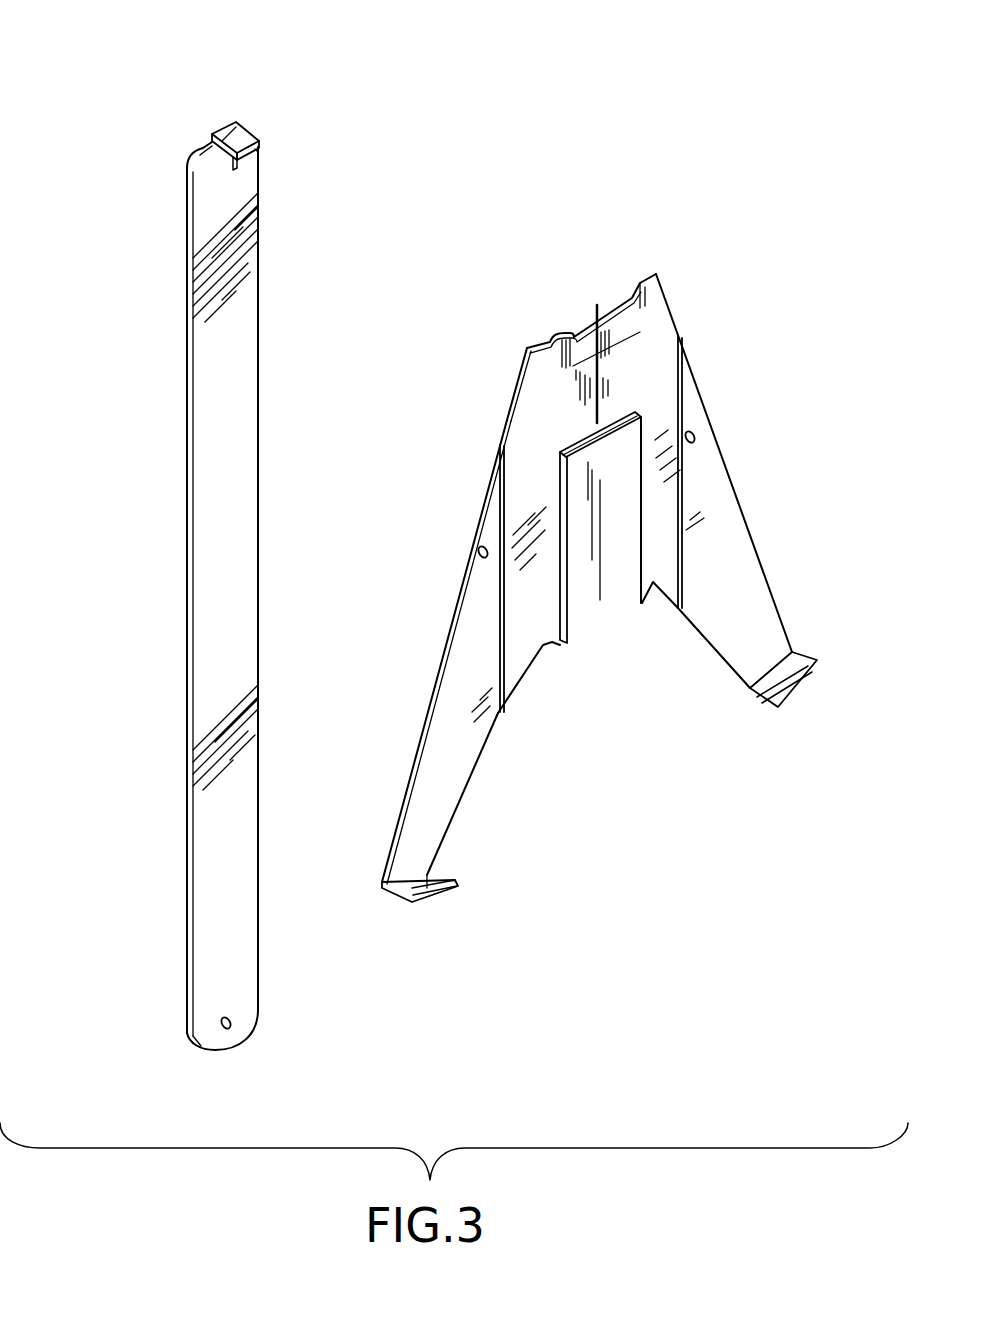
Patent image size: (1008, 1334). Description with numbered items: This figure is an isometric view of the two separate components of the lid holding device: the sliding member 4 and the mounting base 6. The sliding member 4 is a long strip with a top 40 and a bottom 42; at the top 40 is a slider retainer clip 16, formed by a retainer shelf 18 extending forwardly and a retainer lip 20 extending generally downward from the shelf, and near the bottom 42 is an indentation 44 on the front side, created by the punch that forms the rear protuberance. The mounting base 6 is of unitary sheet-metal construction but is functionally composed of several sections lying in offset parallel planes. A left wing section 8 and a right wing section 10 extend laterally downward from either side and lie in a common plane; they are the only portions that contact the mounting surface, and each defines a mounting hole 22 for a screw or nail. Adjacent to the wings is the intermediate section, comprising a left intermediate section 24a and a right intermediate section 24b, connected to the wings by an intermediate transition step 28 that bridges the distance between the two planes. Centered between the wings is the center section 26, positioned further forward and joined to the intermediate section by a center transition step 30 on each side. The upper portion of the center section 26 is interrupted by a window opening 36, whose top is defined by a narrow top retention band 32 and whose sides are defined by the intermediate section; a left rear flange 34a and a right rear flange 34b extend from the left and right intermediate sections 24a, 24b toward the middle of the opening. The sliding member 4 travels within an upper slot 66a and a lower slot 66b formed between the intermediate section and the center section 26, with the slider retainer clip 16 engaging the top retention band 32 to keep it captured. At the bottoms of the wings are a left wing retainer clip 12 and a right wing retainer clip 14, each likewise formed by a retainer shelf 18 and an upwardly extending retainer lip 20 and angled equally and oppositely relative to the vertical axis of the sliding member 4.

The sliding member 4 is at (262, 272).
The mounting base 6 is at (663, 307).
The left wing section 8 is at (458, 633).
The right wing section 10 is at (733, 524).
The left wing retainer clip 12 is at (382, 887).
The right wing retainer clip 14 is at (811, 657).
The slider retainer clip 16 is at (243, 136).
The retainer shelf 18 is at (220, 158).
The retainer lip 20 is at (255, 155).
The mounting hole 22 is at (697, 437).
The left intermediate section 24a is at (532, 396).
The right intermediate section 24b is at (651, 514).
The center section 26 is at (634, 452).
The intermediate transition step 28 is at (500, 468).
The center transition step 30 is at (560, 568).
The top retention band 32 is at (580, 333).
The left rear flange 34a is at (590, 364).
The right rear flange 34b is at (612, 357).
The window opening 36 is at (641, 347).
The top of the sliding member 40 is at (235, 105).
The bottom of the sliding member 42 is at (230, 1046).
The indentation 44 is at (233, 1023).
The upper slot 66a is at (622, 350).
The lower slot 66b is at (612, 421).